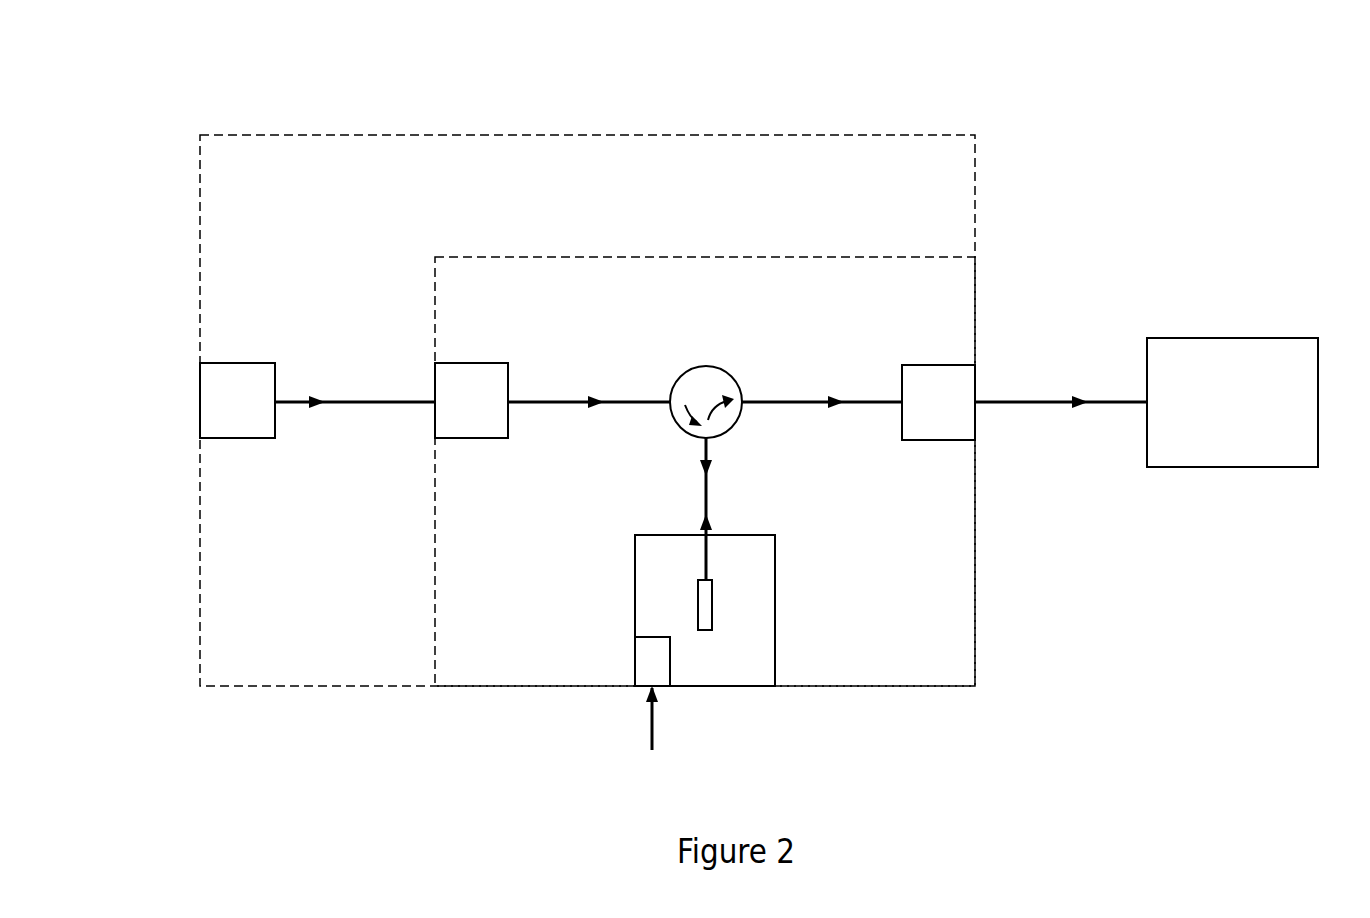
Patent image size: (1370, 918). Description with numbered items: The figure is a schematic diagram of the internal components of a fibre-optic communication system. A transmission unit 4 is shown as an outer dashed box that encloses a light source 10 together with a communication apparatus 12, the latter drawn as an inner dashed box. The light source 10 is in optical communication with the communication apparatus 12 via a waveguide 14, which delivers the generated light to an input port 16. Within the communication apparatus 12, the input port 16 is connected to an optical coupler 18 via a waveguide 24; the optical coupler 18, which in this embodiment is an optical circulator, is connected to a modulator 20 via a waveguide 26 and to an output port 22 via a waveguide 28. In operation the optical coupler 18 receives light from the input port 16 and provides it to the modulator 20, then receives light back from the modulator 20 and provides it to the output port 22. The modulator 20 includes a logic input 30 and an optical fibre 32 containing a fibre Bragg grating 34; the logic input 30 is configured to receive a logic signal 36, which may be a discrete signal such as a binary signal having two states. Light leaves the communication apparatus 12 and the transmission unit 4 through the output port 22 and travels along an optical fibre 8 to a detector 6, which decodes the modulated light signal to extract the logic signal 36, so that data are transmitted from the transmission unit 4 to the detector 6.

The transmission unit 4 is at (687, 135).
The detector 6 is at (1232, 402).
The optical fibre 8 is at (1062, 402).
The light source 10 is at (237, 400).
The communication apparatus 12 is at (893, 257).
The waveguide 14 is at (360, 402).
The input port 16 is at (471, 400).
The optical coupler 18 is at (707, 367).
The modulator 20 is at (635, 563).
The output port 22 is at (938, 402).
The waveguide 24 is at (586, 402).
The waveguide 26 is at (697, 486).
The waveguide 28 is at (826, 402).
The logic input 30 is at (635, 660).
The optical fibre 32 is at (707, 553).
The fibre Bragg grating 34 is at (712, 603).
The logic signal 36 is at (645, 730).